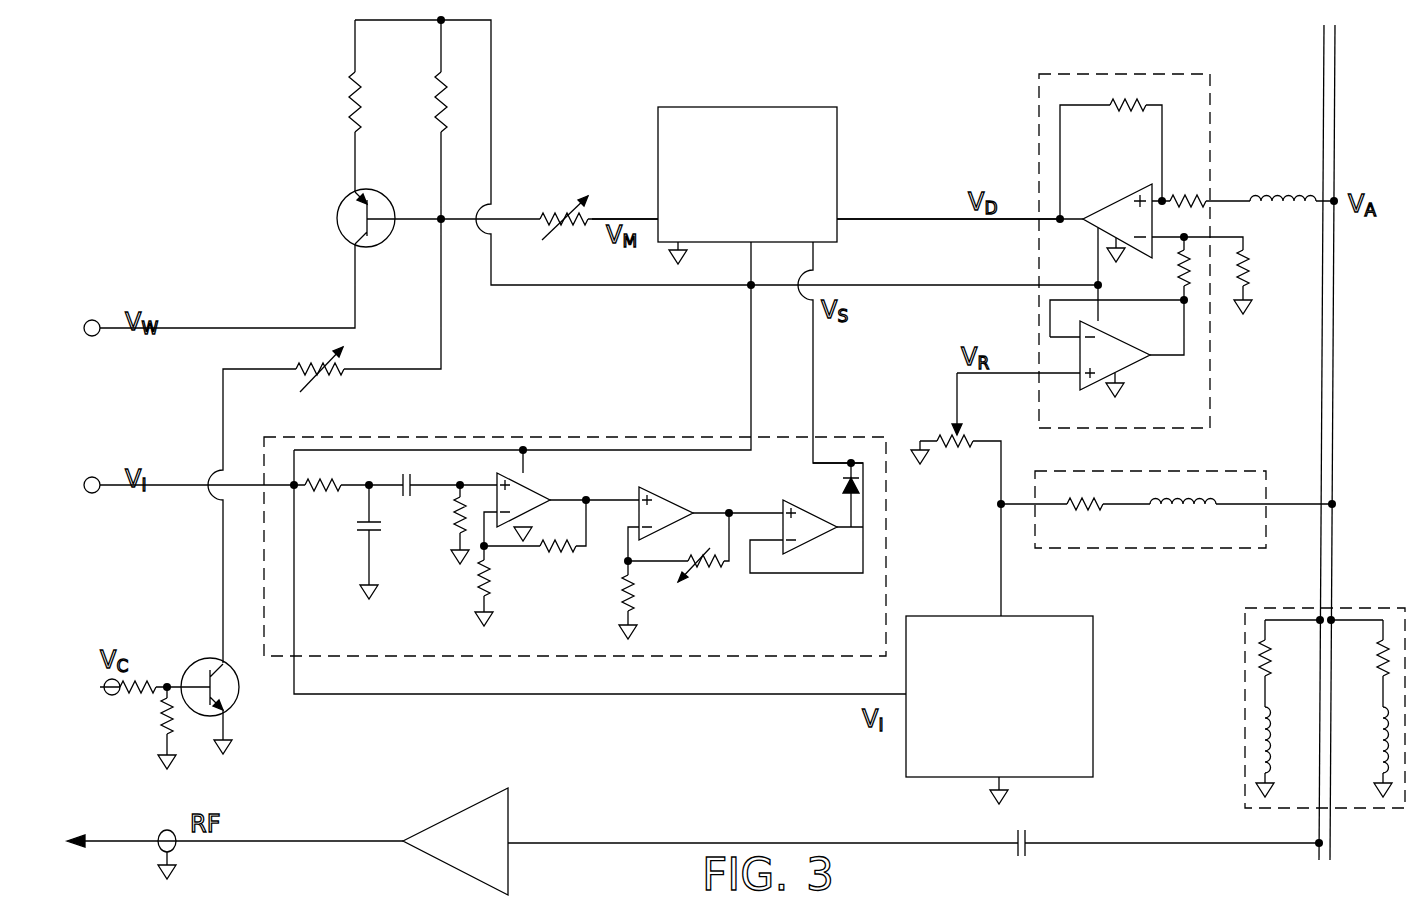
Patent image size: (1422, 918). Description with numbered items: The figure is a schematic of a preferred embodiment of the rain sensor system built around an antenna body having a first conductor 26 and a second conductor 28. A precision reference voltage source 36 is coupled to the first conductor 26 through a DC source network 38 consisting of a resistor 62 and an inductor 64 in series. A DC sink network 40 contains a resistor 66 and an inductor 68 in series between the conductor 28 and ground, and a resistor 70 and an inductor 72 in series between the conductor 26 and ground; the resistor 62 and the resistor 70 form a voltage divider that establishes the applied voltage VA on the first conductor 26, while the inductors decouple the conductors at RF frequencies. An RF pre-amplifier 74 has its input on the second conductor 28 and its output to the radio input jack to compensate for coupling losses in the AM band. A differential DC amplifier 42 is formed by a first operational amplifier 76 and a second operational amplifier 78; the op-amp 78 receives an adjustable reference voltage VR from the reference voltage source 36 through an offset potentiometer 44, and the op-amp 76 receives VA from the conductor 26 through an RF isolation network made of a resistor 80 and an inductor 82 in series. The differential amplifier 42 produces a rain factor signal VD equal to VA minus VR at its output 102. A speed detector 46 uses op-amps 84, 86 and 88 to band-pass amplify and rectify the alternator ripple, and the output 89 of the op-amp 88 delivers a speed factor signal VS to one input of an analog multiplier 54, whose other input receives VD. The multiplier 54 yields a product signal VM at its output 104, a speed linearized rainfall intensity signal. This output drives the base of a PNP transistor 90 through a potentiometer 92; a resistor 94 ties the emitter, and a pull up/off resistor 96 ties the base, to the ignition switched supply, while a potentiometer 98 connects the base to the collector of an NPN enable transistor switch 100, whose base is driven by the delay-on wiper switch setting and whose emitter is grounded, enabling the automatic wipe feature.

The first conductor 26 is at (1334, 290).
The second conductor 28 is at (1323, 66).
The reference voltage source 36 is at (957, 615).
The DC source network 38 is at (1150, 491).
The DC sink network 40 is at (1303, 689).
The differential DC amplifier 42 is at (1122, 236).
The offset potentiometer 44 is at (945, 428).
The speed detector 46 is at (575, 530).
The analog multiplier 54 is at (717, 107).
The resistor 62 is at (1090, 508).
The inductor 64 is at (1190, 512).
The resistor 66 is at (1258, 658).
The inductor 68 is at (1258, 732).
The resistor 70 is at (1375, 655).
The inductor 72 is at (1375, 738).
The RF pre-amplifier 74 is at (468, 808).
The first operational amplifier 76 is at (1122, 200).
The second operational amplifier 78 is at (1133, 366).
The resistor 80 is at (1185, 198).
The inductor 82 is at (1290, 200).
The operational amplifier 84 is at (535, 493).
The operational amplifier 86 is at (668, 501).
The operational amplifier 88 is at (813, 515).
The output 89 is at (813, 393).
The PNP transistor 90 is at (342, 200).
The potentiometer 92 is at (549, 206).
The resistor 94 is at (350, 110).
The pull up/off resistor 96 is at (437, 88).
The potentiometer 98 is at (337, 378).
The enable transistor switch 100 is at (198, 678).
The output 102 is at (862, 219).
The output 104 is at (633, 216).